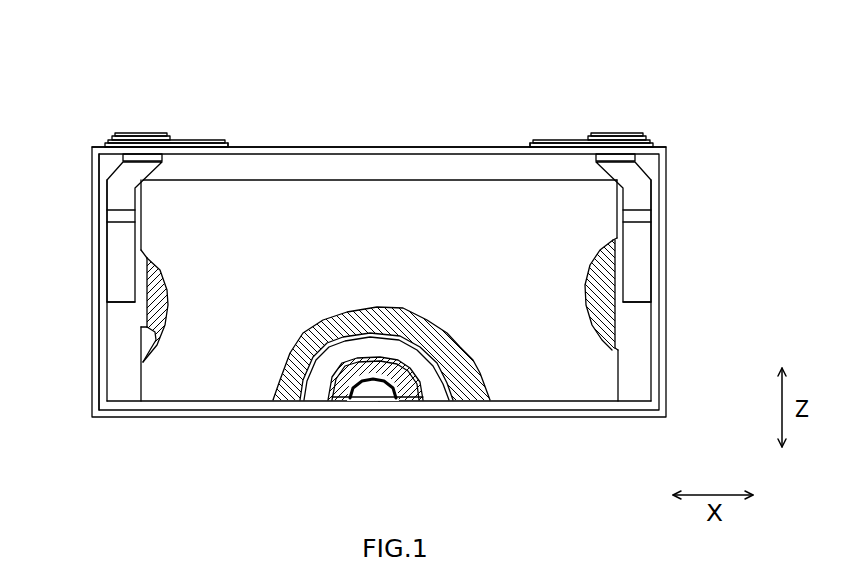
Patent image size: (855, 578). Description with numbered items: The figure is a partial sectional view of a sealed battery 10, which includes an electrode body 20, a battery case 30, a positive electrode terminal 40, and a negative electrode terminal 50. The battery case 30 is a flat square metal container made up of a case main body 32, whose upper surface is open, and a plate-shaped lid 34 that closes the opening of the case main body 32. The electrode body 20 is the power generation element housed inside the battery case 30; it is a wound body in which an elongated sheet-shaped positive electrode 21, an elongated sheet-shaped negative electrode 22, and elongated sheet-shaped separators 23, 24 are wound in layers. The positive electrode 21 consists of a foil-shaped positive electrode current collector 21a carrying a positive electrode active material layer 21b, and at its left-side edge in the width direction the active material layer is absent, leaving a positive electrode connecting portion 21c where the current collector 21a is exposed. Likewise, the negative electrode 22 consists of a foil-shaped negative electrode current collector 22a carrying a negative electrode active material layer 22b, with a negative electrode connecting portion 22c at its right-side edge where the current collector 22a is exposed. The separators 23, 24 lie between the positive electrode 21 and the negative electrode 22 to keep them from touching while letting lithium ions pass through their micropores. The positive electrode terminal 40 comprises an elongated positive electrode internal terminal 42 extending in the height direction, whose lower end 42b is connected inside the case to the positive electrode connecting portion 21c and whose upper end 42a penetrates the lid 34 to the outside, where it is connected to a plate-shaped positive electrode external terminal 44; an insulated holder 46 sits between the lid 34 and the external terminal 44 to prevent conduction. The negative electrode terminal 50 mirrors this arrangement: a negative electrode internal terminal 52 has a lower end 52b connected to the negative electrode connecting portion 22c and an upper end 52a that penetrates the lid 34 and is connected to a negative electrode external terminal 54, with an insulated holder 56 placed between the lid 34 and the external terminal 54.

The sealed battery 10 is at (70, 31).
The electrode body 20 is at (348, 176).
The positive electrode 21 is at (342, 394).
The positive electrode current collector 21a is at (105, 368).
The positive electrode active material layer 21b is at (164, 295).
The positive electrode connecting portion 21c is at (121, 393).
The negative electrode 22 is at (287, 400).
The negative electrode current collector 22a is at (661, 372).
The negative electrode active material layer 22b is at (596, 266).
The negative electrode connecting portion 22c is at (635, 395).
The separator 23 is at (318, 398).
The separator 24 is at (377, 391).
The battery case 30 is at (90, 143).
The case main body 32 is at (90, 190).
The lid 34 is at (410, 146).
The positive electrode terminal 40 is at (157, 118).
The positive electrode internal terminal 42 is at (117, 257).
The upper end of positive electrode internal terminal 42a is at (133, 134).
The lower end of positive electrode internal terminal 42b is at (118, 290).
The positive electrode external terminal 44 is at (188, 137).
The insulated holder 46 is at (230, 144).
The negative electrode terminal 50 is at (592, 121).
The negative electrode internal terminal 52 is at (640, 238).
The upper end of negative electrode internal terminal 52a is at (620, 133).
The lower end of negative electrode internal terminal 52b is at (638, 288).
The negative electrode external terminal 54 is at (558, 137).
The insulated holder 56 is at (526, 145).